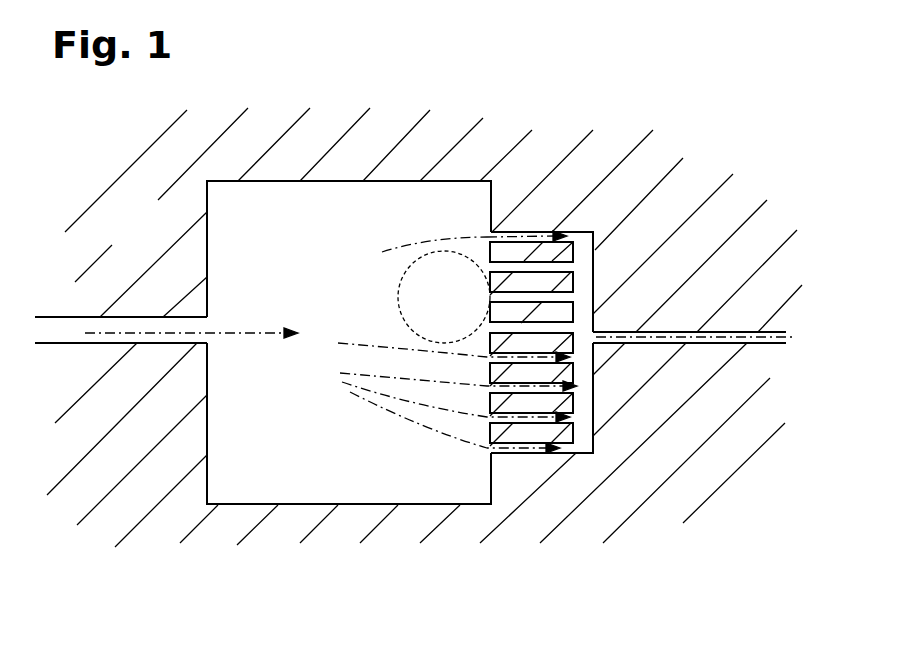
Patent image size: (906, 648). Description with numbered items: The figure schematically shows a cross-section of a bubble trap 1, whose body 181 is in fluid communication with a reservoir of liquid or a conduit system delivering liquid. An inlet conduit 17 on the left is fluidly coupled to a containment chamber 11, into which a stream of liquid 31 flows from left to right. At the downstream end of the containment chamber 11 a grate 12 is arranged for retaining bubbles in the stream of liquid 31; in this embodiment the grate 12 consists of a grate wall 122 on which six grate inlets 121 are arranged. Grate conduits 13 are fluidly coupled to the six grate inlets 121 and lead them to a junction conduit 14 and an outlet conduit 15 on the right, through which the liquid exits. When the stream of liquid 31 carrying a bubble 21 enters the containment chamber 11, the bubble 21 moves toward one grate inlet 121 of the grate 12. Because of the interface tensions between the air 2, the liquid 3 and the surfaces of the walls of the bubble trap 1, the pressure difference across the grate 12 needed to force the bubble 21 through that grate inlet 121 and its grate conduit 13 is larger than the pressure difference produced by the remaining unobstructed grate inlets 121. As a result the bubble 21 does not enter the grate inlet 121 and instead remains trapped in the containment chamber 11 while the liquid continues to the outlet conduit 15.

The bubble trap 1 is at (737, 147).
The air 2 is at (386, 184).
The liquid 3 is at (340, 435).
The containment chamber 11 is at (310, 284).
The grate 12 is at (514, 311).
The grate inlets 121 is at (513, 380).
The grate wall 122 is at (488, 240).
The grate conduits 13 is at (520, 245).
The junction conduit 14 is at (597, 250).
The outlet conduit 15 is at (624, 340).
The inlet conduit 17 is at (67, 333).
The bubble 21 is at (456, 314).
The stream of liquid 31 is at (228, 335).
The body 181 is at (152, 236).